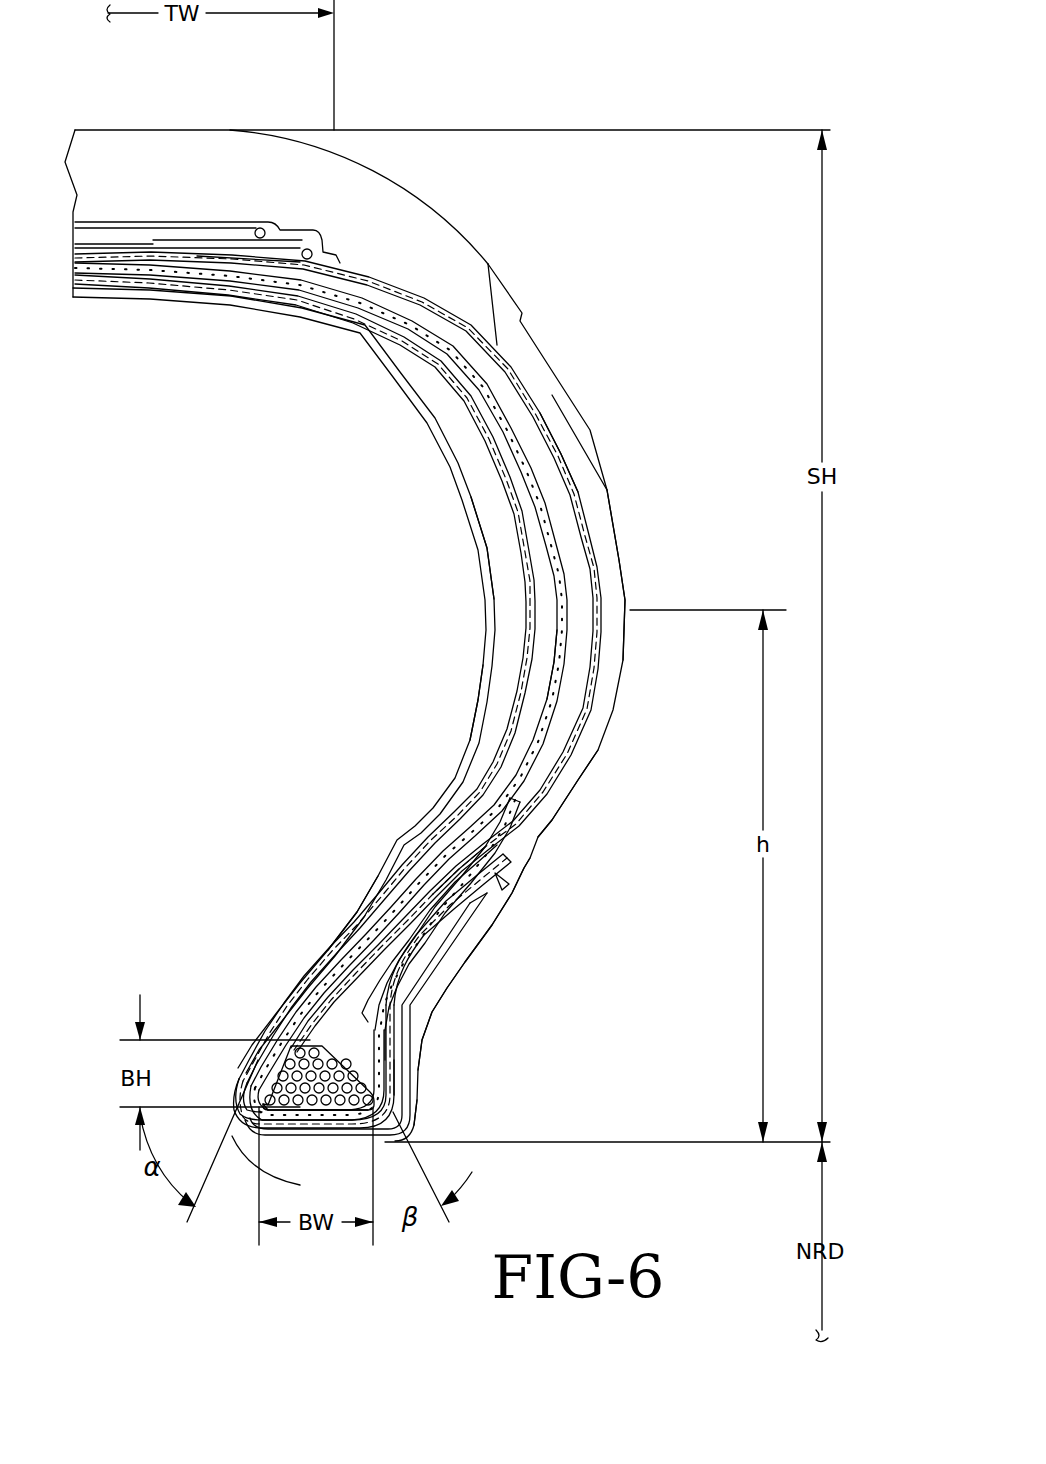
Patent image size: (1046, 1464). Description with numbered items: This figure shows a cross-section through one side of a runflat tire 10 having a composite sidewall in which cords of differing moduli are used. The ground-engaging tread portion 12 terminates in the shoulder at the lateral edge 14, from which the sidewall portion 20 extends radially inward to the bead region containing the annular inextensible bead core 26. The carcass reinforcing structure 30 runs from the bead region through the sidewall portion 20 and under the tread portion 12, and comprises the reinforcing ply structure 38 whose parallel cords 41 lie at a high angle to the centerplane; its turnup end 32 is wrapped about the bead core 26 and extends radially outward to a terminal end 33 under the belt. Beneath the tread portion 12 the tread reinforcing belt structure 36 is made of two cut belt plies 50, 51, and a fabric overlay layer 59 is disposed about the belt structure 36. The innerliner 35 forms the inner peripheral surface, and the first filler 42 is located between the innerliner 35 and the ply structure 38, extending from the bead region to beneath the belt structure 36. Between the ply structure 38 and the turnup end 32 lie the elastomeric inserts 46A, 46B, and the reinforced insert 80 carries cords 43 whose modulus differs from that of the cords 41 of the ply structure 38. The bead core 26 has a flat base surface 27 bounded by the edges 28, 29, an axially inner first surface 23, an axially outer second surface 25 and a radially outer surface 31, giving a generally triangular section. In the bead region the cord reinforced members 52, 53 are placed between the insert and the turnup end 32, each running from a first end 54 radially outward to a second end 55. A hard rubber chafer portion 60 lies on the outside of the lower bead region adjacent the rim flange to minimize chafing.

The tire 10 is at (378, 96).
The tread portion 12 is at (90, 214).
The lateral edge of the tread 14 is at (345, 149).
The sidewall portion 20 is at (625, 580).
The axially inner first surface of the bead core 23 is at (270, 1085).
The axially outer second surface of the bead core 25 is at (385, 1082).
The bead core 26 is at (323, 1058).
The flat base surface 27 is at (340, 1110).
The edge of the flat base surface 28 is at (262, 1108).
The edge of the flat base surface 29 is at (388, 1106).
The carcass reinforcing structure 30 is at (100, 290).
The radially outer surface of the bead core 31 is at (372, 1017).
The turnup end 32 is at (560, 788).
The terminal end of the turnup 33 is at (195, 262).
The innerliner 35 is at (355, 910).
The belt structure 36 is at (162, 222).
The reinforcing ply structure 38 is at (527, 645).
The cords 41 is at (505, 505).
The first filler 42 is at (492, 700).
The cord 43 is at (572, 556).
The elastomeric insert 46A is at (548, 595).
The elastomeric insert 46B is at (590, 640).
The belt ply 50 is at (240, 250).
The belt ply 51 is at (240, 252).
The axially outer cord reinforced member 52 is at (423, 930).
The axially inner cord reinforced member 53 is at (480, 897).
The first end of the cord reinforced member 54 is at (385, 1050).
The second end of the cord reinforced member 55 is at (497, 876).
The fabric overlay layer 59 is at (200, 240).
The chafer portion 60 is at (457, 980).
The reinforced insert 80 is at (550, 713).